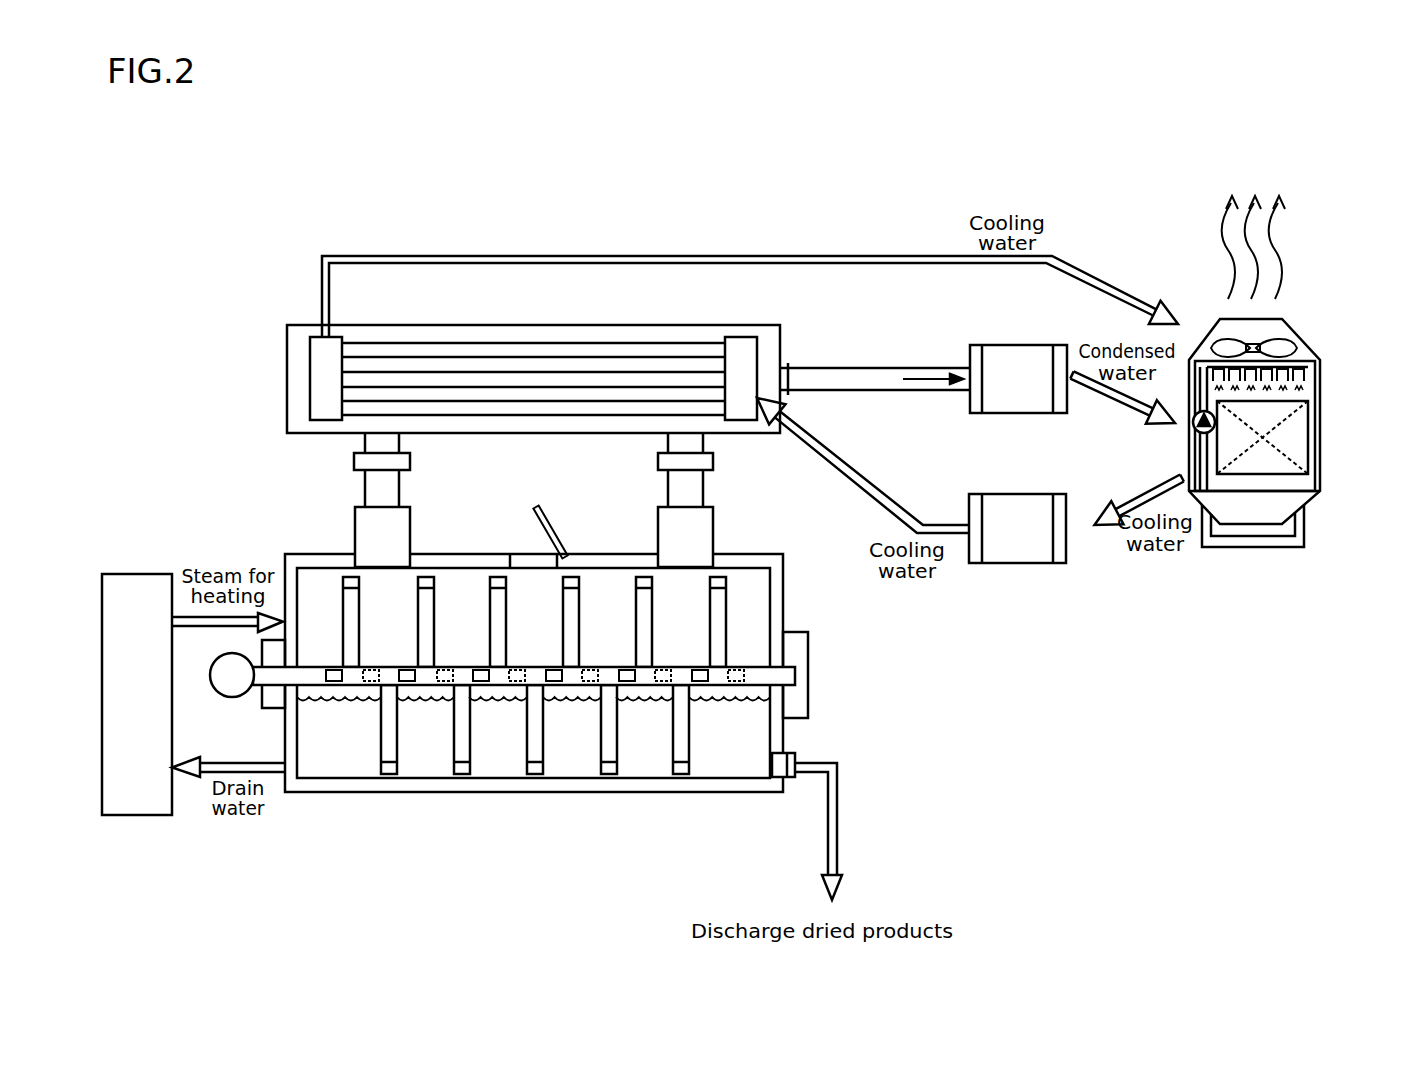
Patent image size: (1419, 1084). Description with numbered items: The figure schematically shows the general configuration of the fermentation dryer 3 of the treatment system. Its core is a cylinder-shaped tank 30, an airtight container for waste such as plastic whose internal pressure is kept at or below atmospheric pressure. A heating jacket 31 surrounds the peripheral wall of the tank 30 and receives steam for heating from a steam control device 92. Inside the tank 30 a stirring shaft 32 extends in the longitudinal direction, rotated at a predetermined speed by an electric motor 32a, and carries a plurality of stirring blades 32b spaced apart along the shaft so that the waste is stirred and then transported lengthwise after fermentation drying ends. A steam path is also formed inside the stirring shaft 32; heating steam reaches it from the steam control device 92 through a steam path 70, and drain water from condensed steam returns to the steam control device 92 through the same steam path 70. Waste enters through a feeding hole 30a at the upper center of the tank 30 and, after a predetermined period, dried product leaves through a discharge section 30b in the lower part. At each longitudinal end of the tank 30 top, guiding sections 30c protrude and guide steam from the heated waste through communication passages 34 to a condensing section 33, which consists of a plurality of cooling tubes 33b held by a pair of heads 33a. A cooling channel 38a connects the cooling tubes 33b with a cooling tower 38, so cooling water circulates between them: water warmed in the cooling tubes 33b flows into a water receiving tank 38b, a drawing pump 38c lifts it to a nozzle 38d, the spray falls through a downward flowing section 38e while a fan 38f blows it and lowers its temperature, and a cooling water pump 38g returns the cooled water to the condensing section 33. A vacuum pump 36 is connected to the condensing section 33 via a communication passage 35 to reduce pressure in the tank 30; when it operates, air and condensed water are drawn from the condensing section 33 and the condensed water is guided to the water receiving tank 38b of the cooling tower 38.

The fermentation dryer 3 is at (499, 665).
The tank 30 is at (372, 790).
The feeding hole 30a is at (531, 554).
The discharge section 30b is at (777, 777).
The guiding sections 30c is at (355, 530).
The heating jacket 31 is at (529, 783).
The stirring shaft 32 is at (307, 675).
The electric motor 32a is at (238, 697).
The stirring blades 32b is at (376, 670).
The condensing section 33 is at (510, 351).
The heads 33a is at (320, 337).
The cooling tubes 33b is at (485, 345).
The communication passages 34 is at (365, 446).
The communication passage 35 is at (957, 366).
The vacuum pump 36 is at (1040, 350).
The cooling tower 38 is at (1260, 411).
The cooling channel 38a is at (1080, 231).
The water receiving tank 38b is at (1246, 516).
The drawing pump 38c is at (1196, 436).
The nozzle 38d is at (1304, 370).
The downward flowing section 38e is at (1306, 438).
The fan 38f is at (1288, 347).
The cooling water pump 38g is at (1022, 553).
The steam path 70 is at (212, 560).
The steam control device 92 is at (132, 574).